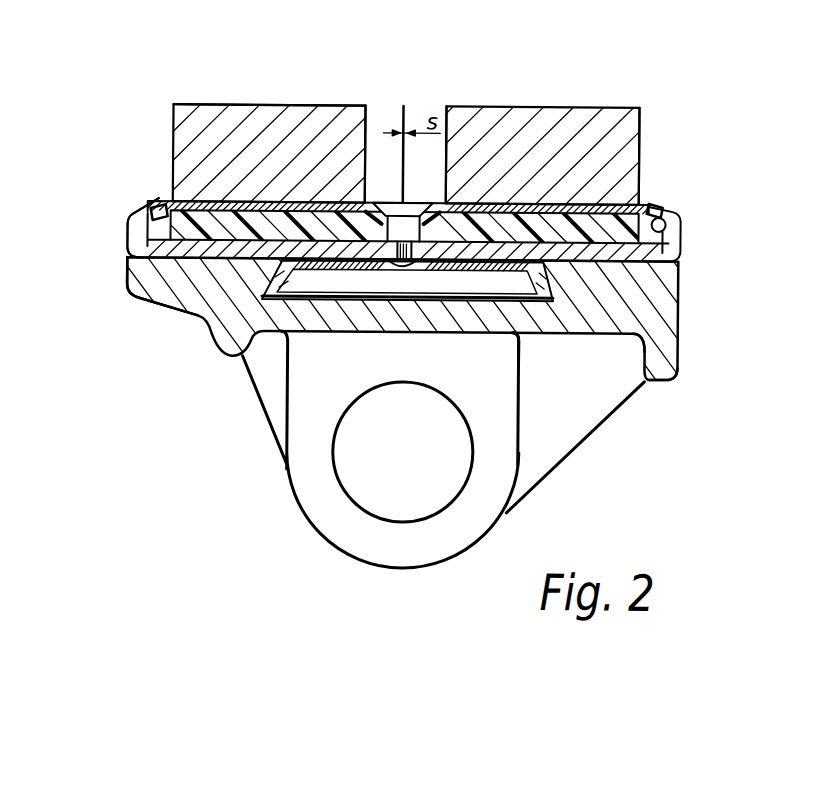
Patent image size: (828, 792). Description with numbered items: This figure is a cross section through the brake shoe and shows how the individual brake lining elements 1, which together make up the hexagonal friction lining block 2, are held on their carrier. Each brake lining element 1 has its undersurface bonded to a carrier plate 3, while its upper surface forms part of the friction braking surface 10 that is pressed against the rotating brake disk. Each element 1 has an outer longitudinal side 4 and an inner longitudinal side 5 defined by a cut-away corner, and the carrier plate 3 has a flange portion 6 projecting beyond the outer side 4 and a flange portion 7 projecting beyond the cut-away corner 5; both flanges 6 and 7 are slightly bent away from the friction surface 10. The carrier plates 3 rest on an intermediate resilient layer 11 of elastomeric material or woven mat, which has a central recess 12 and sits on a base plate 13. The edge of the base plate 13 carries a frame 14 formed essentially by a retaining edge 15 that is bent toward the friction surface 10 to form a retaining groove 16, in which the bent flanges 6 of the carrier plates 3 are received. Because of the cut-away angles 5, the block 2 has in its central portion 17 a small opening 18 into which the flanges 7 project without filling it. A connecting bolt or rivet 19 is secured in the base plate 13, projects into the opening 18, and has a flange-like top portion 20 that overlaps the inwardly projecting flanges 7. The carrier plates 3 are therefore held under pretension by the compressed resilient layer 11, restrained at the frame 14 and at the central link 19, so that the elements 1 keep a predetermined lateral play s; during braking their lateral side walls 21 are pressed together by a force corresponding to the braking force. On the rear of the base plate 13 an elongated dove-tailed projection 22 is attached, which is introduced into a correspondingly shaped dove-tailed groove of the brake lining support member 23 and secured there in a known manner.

The brake lining element 1 is at (212, 142).
The friction lining block 2 is at (641, 130).
The carrier plate 3 is at (519, 200).
The outer longitudinal side 4 is at (645, 171).
The inner longitudinal side 5 is at (383, 201).
The flange portion 6 is at (680, 225).
The flange portion 7 is at (443, 145).
The friction braking surface 10 is at (232, 106).
The intermediate resilient layer 11 is at (680, 278).
The central recess 12 is at (364, 262).
The base plate 13 is at (176, 262).
The frame 14 is at (120, 231).
The retaining edge 15 is at (132, 241).
The retaining groove 16 is at (130, 259).
The central portion 17 is at (421, 92).
The central opening 18 is at (366, 151).
The connecting bolt or rivet 19 is at (524, 343).
The flange-like top portion 20 is at (407, 264).
The lateral side wall 21 is at (368, 193).
The dove-tailed projection 22 is at (270, 283).
The brake lining support member 23 is at (655, 318).